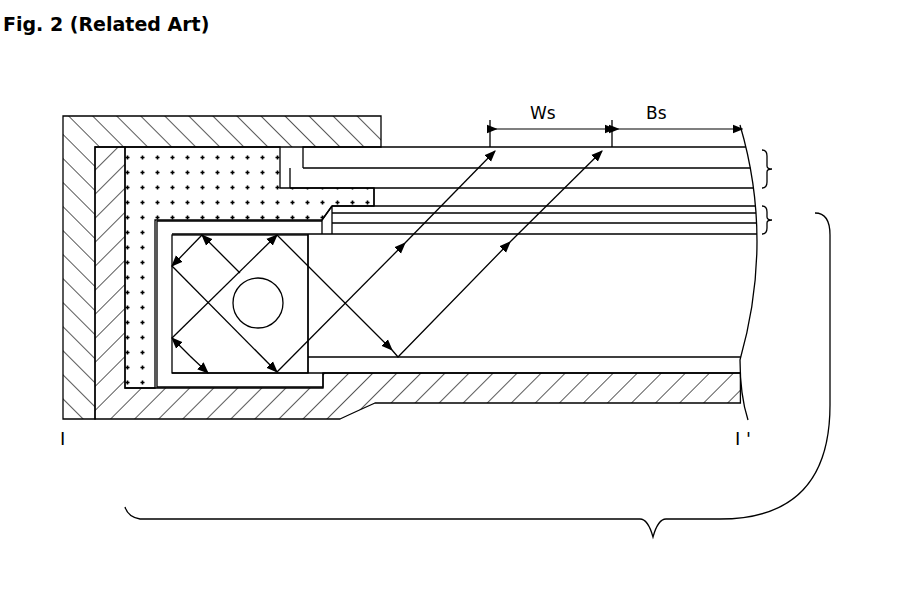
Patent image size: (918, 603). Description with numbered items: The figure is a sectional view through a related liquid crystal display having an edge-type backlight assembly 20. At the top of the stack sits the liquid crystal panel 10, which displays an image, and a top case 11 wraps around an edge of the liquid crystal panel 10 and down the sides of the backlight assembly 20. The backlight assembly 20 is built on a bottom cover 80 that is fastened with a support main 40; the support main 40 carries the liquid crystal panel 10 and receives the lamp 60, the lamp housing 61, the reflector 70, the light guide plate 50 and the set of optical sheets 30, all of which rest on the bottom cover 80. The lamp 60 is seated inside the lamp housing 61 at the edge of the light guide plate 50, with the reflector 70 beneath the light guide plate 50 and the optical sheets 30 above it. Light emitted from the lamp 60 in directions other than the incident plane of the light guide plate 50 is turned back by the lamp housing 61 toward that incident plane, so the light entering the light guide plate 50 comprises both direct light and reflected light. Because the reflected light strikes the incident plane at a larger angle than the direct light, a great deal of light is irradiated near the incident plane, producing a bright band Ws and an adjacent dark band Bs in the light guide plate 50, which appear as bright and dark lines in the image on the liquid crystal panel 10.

The liquid crystal panel 10 is at (545, 167).
The top case 11 is at (80, 302).
The backlight assembly 20 is at (477, 389).
The set of optical sheets 30 is at (561, 211).
The support main 40 is at (142, 376).
The light guide plate 50 is at (733, 300).
The lamp 60 is at (253, 292).
The lamp housing 61 is at (342, 388).
The reflector 70 is at (733, 365).
The bottom cover 80 is at (513, 392).